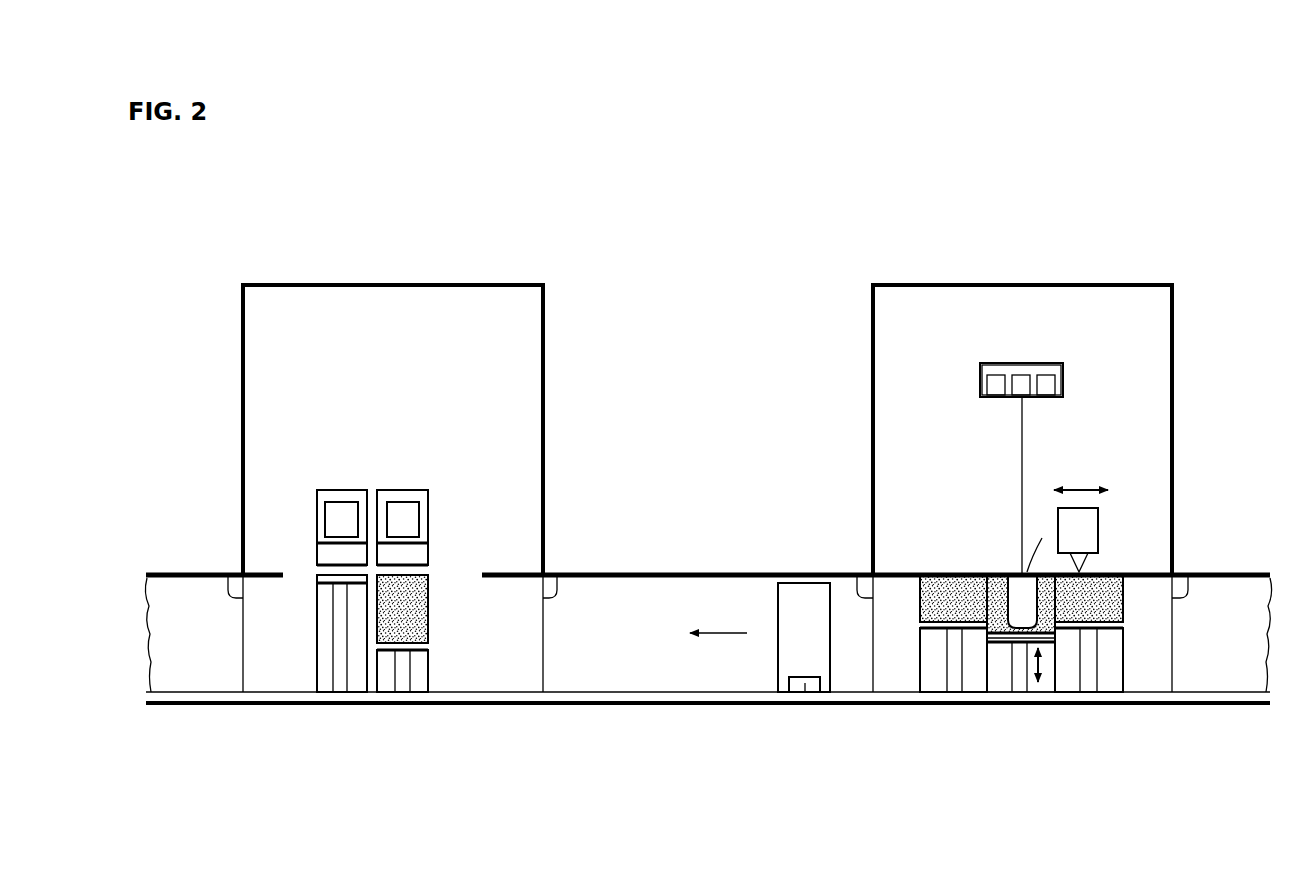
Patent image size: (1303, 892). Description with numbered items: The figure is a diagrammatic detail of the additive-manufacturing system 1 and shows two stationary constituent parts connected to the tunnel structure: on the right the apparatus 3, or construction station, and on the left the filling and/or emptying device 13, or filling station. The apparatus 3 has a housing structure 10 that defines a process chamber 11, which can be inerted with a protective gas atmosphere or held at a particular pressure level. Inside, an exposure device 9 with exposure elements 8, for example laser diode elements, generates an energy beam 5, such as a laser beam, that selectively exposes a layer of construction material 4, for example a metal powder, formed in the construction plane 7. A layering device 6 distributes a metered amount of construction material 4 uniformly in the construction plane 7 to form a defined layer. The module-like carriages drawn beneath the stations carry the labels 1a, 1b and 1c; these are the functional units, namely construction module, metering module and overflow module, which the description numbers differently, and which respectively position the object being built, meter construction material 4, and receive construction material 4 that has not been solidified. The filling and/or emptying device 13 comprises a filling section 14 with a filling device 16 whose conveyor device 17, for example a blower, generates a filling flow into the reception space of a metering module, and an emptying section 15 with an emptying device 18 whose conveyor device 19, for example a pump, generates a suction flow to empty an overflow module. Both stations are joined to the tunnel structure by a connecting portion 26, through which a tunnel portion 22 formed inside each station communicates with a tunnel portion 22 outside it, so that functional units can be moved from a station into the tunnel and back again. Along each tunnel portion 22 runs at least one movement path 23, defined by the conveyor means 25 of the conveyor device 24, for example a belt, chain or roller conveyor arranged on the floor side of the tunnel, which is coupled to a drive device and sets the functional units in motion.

The system 1 is at (783, 188).
The container body 1a is at (805, 598).
The container bottom part 1b is at (428, 672).
The container holder part 1c is at (317, 633).
The apparatus 3 is at (1128, 272).
The construction material 4 is at (428, 618).
The energy beam 5 is at (1022, 445).
The layering device 6 is at (1078, 522).
The construction plane 7 is at (1010, 515).
The exposure element 8 is at (1048, 388).
The exposure device 9 is at (1043, 342).
The housing structure 10 is at (545, 328).
The process chamber 11 is at (1142, 412).
The filling and/or emptying device 13 is at (497, 272).
The filling section 14 is at (428, 553).
The emptying section 15 is at (325, 553).
The filling device 16 is at (428, 515).
The conveyor device 17 is at (401, 506).
The emptying device 18 is at (317, 515).
The conveyor device 19 is at (340, 506).
The tunnel portion 22 is at (182, 572).
The movement path 23 is at (611, 694).
The conveyor device 24 is at (707, 706).
The conveyor means 25 is at (808, 706).
The connecting portion 26 is at (228, 572).